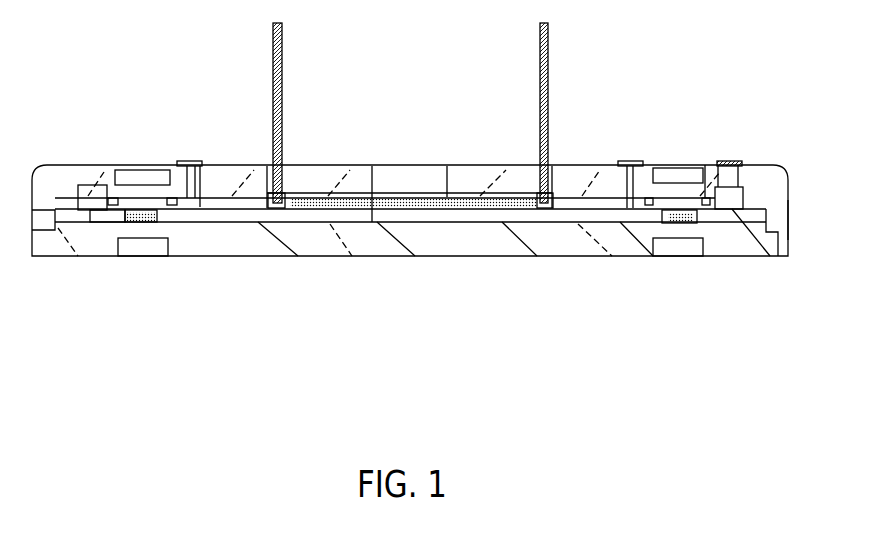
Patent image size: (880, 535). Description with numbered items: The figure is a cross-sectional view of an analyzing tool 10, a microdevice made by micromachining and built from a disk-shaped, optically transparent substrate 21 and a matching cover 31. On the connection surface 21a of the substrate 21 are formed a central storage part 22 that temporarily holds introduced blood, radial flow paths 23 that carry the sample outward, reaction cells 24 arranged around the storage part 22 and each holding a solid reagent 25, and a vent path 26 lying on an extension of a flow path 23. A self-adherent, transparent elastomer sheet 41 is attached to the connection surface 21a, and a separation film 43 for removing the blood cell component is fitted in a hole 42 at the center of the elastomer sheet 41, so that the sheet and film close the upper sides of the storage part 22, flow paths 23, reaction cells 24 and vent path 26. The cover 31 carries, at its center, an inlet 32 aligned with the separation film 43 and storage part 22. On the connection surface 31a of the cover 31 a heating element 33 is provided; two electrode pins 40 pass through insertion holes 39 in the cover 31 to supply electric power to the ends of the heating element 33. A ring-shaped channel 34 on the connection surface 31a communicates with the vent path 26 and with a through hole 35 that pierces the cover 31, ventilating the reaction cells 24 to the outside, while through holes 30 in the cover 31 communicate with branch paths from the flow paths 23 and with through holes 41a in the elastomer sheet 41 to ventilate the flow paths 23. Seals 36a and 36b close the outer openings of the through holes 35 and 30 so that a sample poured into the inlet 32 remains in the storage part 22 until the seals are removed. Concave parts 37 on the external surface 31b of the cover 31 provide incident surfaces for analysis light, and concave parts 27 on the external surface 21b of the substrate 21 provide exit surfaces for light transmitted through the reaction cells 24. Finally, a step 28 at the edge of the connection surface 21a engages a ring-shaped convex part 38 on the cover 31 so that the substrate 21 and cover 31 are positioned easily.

The analyzing tool 10 is at (632, 67).
The substrate 21 is at (790, 245).
The connection surface 21a is at (765, 165).
The external surface 21b is at (480, 256).
The storage part 22 is at (412, 256).
The flow path 23 is at (312, 256).
The reaction cell 24 is at (110, 224).
The reagent 25 is at (145, 224).
The vent path 26 is at (93, 228).
The concave part 27 is at (133, 256).
The step 28 is at (773, 256).
The through hole 30 is at (218, 165).
The cover 31 is at (790, 172).
The connection surface 31a is at (47, 165).
The external surface 31b is at (322, 165).
The inlet 32 is at (435, 165).
The heating element 33 is at (110, 165).
The channel 34 is at (78, 165).
The through hole 35 is at (728, 165).
The seal 36a is at (738, 161).
The seal 36b is at (196, 161).
The concave part 37 is at (143, 165).
The convex part 38 is at (790, 207).
The insertion hole 39 is at (267, 166).
The electrode pin 40 is at (283, 40).
The elastomer sheet 41 is at (575, 256).
The through hole 41a is at (205, 256).
The hole 42 is at (517, 165).
The separation film 43 is at (410, 165).